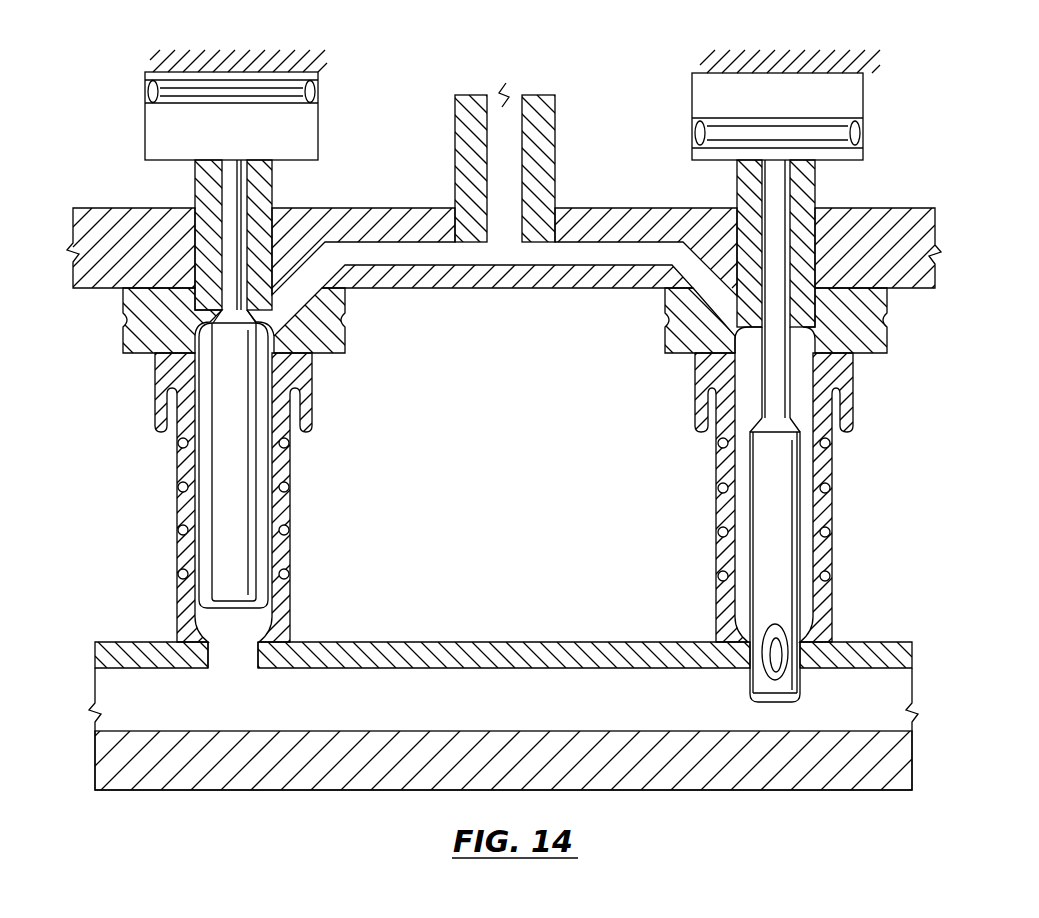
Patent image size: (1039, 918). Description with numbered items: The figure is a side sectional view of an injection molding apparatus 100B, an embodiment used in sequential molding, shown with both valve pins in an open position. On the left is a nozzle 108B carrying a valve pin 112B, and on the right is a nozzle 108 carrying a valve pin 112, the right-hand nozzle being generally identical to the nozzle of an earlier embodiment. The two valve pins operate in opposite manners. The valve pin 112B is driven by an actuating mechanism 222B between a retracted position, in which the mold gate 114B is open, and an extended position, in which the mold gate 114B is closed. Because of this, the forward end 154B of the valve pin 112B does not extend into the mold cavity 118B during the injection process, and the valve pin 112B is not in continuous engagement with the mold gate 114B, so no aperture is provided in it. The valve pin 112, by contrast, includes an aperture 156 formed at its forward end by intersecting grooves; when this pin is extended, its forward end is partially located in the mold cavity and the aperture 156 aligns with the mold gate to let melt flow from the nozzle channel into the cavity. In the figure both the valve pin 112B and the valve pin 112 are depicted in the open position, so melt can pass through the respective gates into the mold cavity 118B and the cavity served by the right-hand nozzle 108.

The actuating mechanism 222B is at (277, 31).
The injection molding apparatus 100B is at (891, 172).
The nozzle 108B is at (300, 363).
The valve pin 112B is at (231, 480).
The forward end 154B is at (240, 556).
The mold gate 114B is at (246, 652).
The mold cavity 118B is at (538, 710).
The nozzle 108 is at (836, 366).
The valve pin 112 is at (779, 472).
The aperture 156 is at (772, 645).